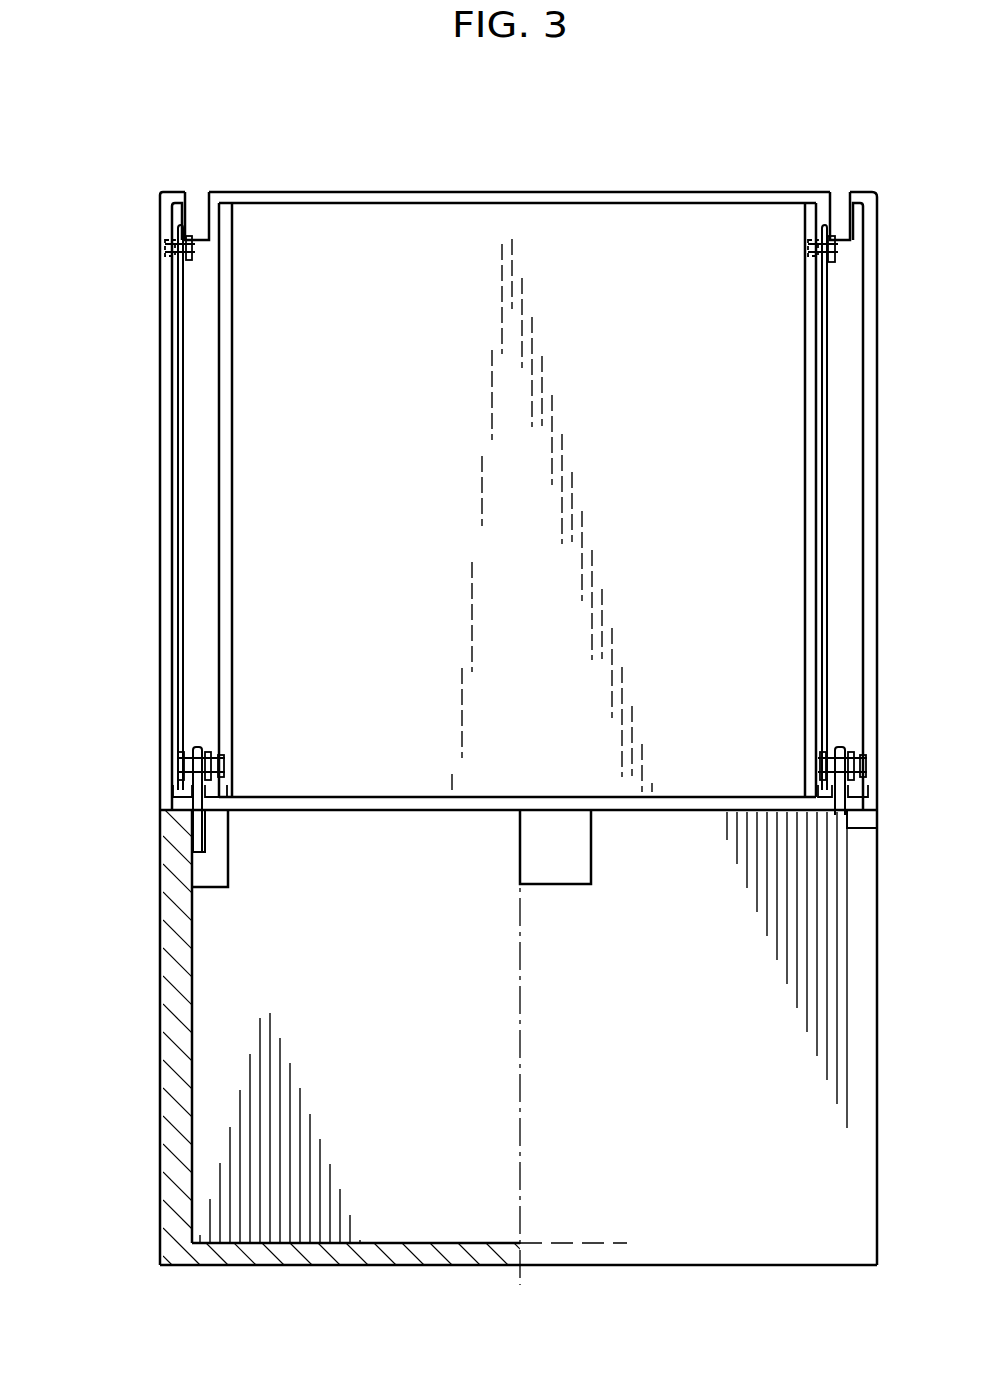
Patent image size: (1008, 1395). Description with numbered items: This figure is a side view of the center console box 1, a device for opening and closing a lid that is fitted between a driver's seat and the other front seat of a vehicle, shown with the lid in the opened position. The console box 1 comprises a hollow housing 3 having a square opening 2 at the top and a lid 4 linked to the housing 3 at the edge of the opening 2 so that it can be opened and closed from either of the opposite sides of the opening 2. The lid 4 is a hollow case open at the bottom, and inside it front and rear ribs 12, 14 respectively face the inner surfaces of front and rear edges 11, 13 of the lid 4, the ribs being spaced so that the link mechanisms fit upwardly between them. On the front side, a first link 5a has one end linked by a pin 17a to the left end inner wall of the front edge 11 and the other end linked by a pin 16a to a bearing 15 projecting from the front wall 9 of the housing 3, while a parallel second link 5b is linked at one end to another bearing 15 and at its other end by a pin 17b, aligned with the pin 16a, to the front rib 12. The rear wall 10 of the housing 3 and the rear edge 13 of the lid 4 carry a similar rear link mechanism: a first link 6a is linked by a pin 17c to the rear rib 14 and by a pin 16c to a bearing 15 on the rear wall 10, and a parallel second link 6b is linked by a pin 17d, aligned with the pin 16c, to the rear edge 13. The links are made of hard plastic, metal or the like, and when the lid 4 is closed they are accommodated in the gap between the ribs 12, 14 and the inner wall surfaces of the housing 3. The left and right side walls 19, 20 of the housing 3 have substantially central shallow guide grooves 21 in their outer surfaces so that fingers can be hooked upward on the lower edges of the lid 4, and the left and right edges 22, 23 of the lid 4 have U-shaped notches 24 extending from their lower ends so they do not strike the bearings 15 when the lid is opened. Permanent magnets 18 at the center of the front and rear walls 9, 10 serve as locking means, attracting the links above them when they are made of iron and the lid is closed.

The center console box 1 is at (490, 1052).
The square opening 2 is at (398, 816).
The hollow housing 3 is at (448, 1247).
The lid 4 is at (419, 252).
The first link 5a is at (182, 405).
The second link 5b is at (200, 745).
The first link 6a is at (828, 395).
The second link 6b is at (845, 745).
The front wall 9 is at (176, 962).
The rear wall 10 is at (878, 932).
The front edge 11 is at (165, 520).
The front rib 12 is at (233, 522).
The rear edge 13 is at (877, 468).
The rear rib 14 is at (806, 466).
The bearing 15 is at (198, 822).
The pin 16a is at (180, 770).
The pin 16c is at (822, 768).
The pin 17a is at (178, 252).
The pin 17b is at (225, 766).
The pin 17c is at (812, 252).
The pin 17d is at (866, 765).
The permanent magnet 18 is at (215, 870).
The left side wall 19 is at (774, 1232).
The right side wall 20 is at (217, 1047).
The guide groove 21 is at (570, 832).
The left edge 22 is at (629, 190).
The right edge 23 is at (690, 800).
The U-shaped notch 24 is at (197, 207).